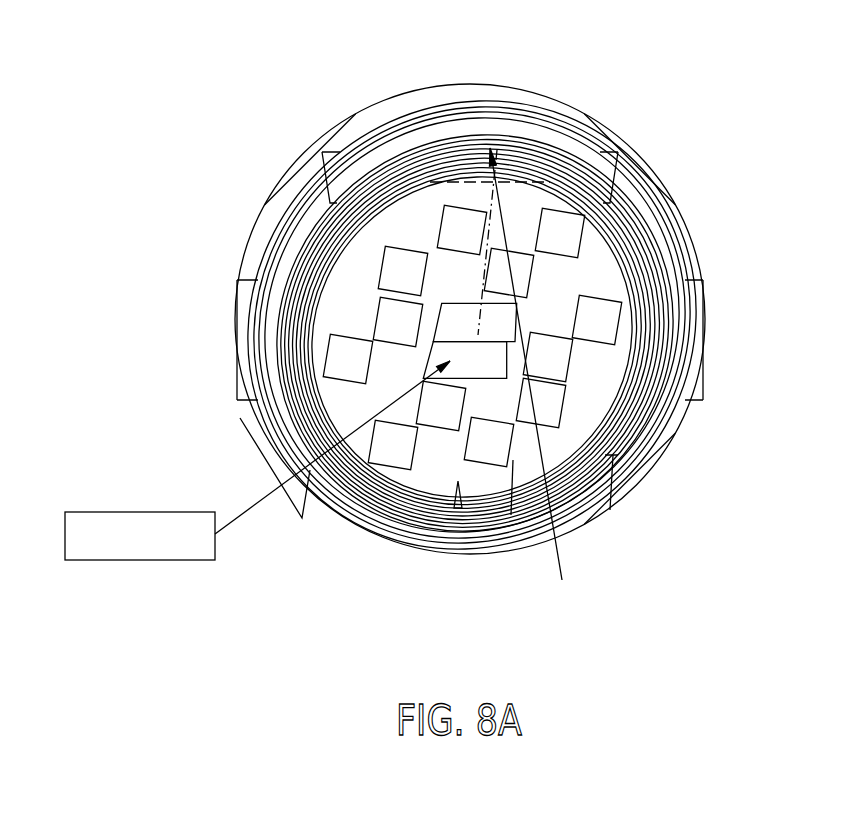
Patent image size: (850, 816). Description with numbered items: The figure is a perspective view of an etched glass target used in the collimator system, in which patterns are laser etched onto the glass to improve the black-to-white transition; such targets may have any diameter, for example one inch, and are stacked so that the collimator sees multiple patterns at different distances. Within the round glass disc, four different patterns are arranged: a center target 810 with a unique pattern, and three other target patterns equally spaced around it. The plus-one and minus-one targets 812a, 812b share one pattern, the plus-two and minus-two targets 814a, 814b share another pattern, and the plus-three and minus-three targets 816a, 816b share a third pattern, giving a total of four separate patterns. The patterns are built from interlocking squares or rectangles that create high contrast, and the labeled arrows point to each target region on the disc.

The center target 810 is at (135, 512).
The +1 target 812a is at (232, 168).
The -1 target 812b is at (750, 475).
The +2 target 814a is at (518, 70).
The -2 target 814b is at (579, 576).
The +3 target 816a is at (757, 218).
The -3 target 816b is at (409, 591).